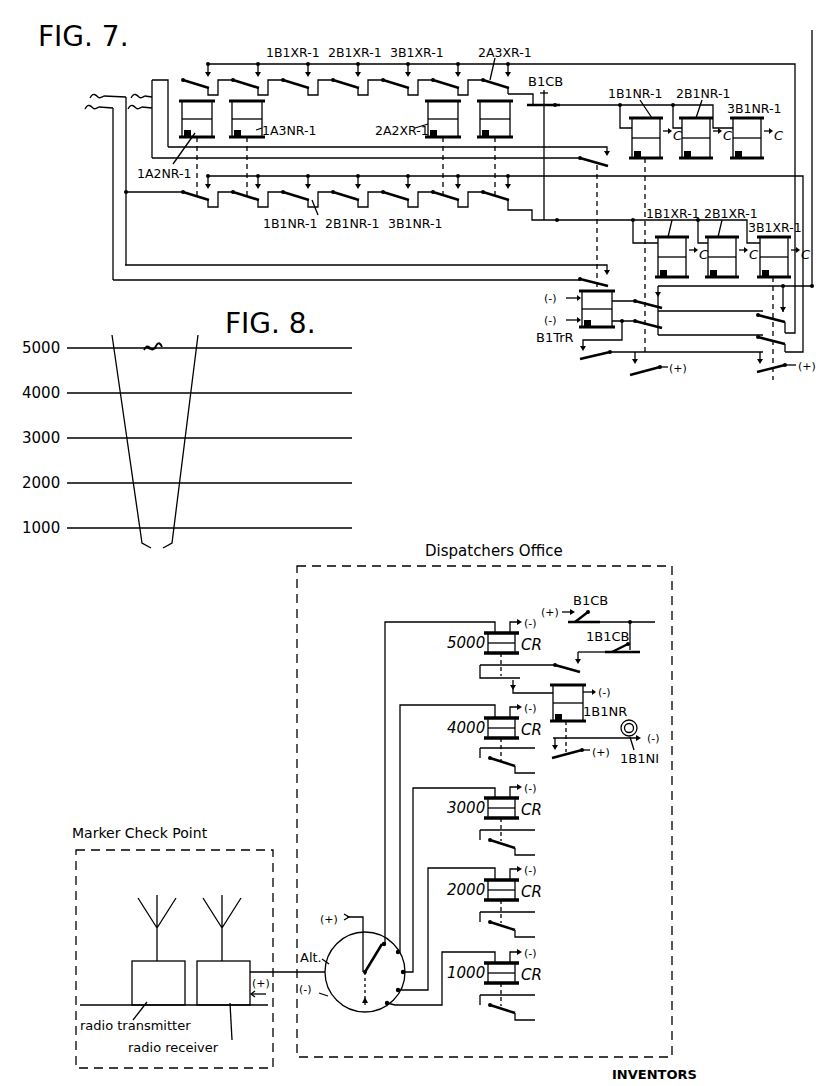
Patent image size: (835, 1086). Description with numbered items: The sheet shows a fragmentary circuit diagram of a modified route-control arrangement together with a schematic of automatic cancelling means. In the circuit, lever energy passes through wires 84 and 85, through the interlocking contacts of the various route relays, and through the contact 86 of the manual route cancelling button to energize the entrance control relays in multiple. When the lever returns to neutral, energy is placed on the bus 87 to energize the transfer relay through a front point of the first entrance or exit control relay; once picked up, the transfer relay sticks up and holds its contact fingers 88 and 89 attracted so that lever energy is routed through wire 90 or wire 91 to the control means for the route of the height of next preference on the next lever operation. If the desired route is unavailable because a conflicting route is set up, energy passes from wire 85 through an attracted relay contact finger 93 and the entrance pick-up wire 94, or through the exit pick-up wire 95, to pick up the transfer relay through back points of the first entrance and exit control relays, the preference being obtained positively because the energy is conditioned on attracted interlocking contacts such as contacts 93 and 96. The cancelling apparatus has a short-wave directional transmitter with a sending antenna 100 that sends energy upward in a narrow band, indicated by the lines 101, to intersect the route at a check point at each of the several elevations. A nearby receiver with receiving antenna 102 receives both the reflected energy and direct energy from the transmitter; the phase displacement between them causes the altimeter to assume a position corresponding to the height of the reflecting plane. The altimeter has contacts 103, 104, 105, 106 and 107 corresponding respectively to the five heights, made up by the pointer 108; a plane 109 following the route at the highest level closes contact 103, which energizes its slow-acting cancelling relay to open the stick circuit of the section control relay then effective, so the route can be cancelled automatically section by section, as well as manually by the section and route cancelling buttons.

In FIG. 7, the wire 84 is at (150, 93).
In FIG. 7, the wire 85 is at (168, 80).
In FIG. 7, the contact of manual cancelling button B1CB 86 is at (546, 106).
In FIG. 7, the bus 87 is at (812, 42).
In FIG. 7, the contact finger of transfer relay 88 is at (602, 161).
In FIG. 7, the contact finger of transfer relay 89 is at (602, 283).
In FIG. 7, the wire 90 is at (152, 124).
In FIG. 7, the wire 91 is at (181, 281).
In FIG. 7, the relay contact finger 93 is at (192, 86).
In FIG. 7, the entrance pick-up wire 94 is at (705, 64).
In FIG. 7, the exit pick-up wire 95 is at (686, 176).
In FIG. 7, the interlocking contact 96 is at (197, 199).
In FIG. 8, the sending antenna 100 is at (146, 916).
In FIG. 8, the lines 101 is at (155, 454).
In FIG. 8, the receiving antenna 102 is at (231, 912).
In FIG. 8, the altimeter contact 103 is at (384, 941).
In FIG. 8, the altimeter contact 104 is at (398, 954).
In FIG. 8, the altimeter contact 105 is at (402, 975).
In FIG. 8, the altimeter contact 106 is at (399, 993).
In FIG. 8, the altimeter contact 107 is at (385, 1006).
In FIG. 8, the pointer 108 is at (370, 956).
In FIG. 8, the plane 109 is at (153, 345).